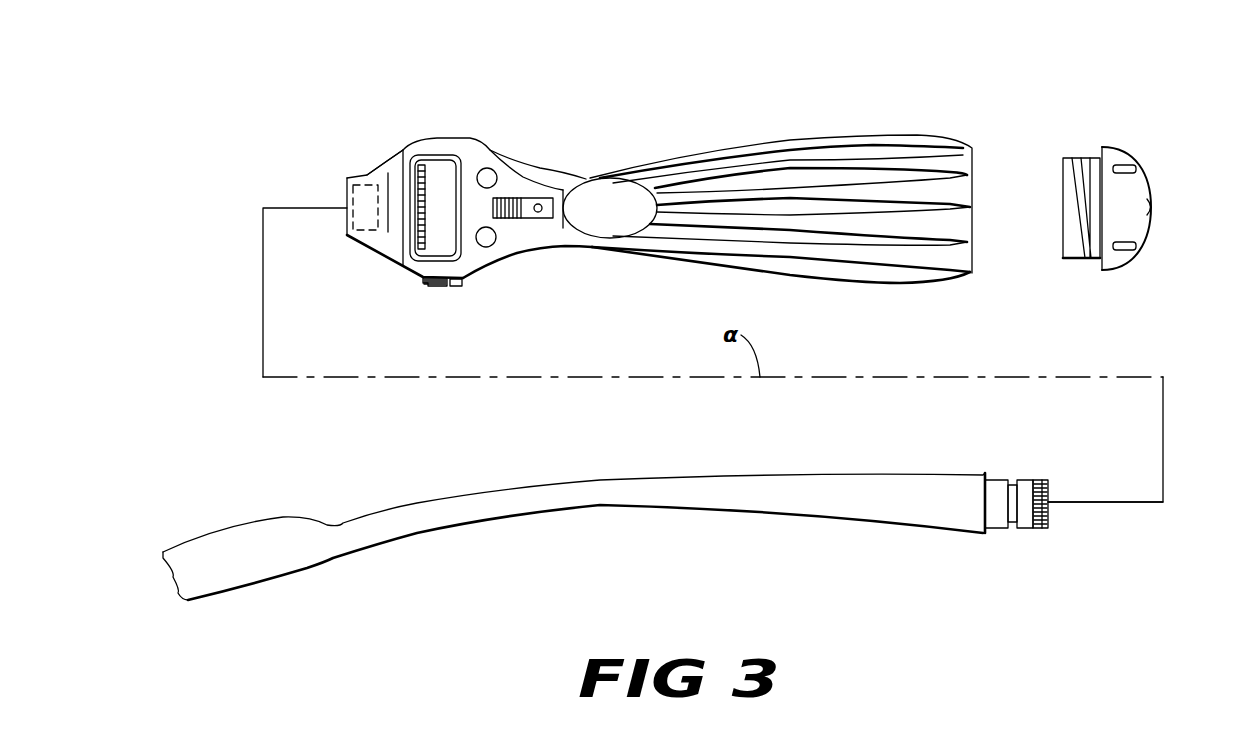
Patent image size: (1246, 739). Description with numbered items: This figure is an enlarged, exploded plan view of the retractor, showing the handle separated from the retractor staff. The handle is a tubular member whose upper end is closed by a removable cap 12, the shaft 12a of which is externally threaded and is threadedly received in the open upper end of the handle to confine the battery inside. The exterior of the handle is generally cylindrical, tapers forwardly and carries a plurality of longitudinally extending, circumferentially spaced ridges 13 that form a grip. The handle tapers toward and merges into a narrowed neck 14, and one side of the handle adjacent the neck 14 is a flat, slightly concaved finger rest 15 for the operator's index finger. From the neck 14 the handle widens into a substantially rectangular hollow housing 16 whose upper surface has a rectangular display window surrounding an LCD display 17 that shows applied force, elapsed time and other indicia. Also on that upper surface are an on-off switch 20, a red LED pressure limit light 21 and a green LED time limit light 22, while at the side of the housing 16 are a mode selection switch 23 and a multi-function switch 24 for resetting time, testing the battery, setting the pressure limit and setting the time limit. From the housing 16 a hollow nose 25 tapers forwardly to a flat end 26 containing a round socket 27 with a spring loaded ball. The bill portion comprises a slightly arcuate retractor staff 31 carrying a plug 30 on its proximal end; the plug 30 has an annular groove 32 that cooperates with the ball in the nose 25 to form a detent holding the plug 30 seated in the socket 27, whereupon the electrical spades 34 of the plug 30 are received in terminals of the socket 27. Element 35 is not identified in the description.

The removable cap 12 is at (1138, 190).
The shaft 12a is at (1084, 260).
The ridges 13 is at (780, 180).
The neck 14 is at (540, 250).
The finger rest 15 is at (588, 197).
The housing 16 is at (483, 268).
The LCD display 17 is at (437, 215).
The on-off switch 20 is at (495, 198).
The red LED pressure limit light 21 is at (489, 175).
The green LED time limit light 22 is at (493, 242).
The mode selection switch 23 is at (437, 288).
The multi-function switch 24 is at (463, 288).
The hollow nose 25 is at (387, 175).
The flat end 26 is at (350, 178).
The round socket 27 is at (343, 199).
The plug 30 is at (978, 121).
The retractor staff 31 is at (750, 472).
The annular groove 32 is at (1013, 525).
The electrical spades 34 is at (1048, 497).
The collar 35 is at (995, 478).